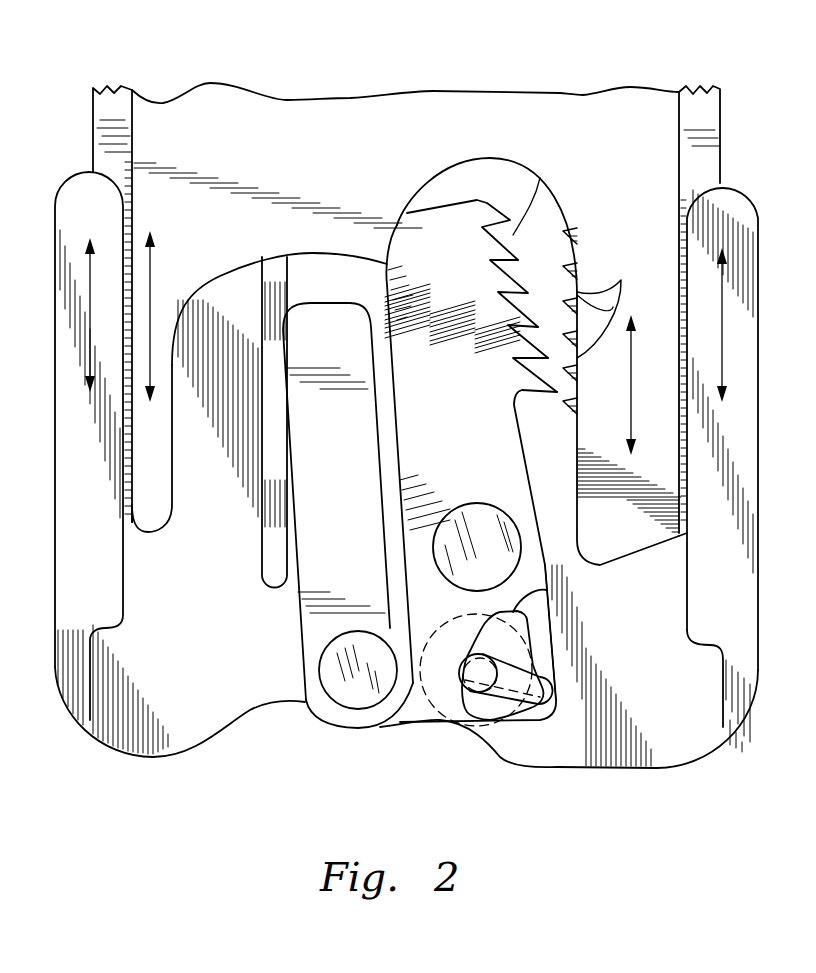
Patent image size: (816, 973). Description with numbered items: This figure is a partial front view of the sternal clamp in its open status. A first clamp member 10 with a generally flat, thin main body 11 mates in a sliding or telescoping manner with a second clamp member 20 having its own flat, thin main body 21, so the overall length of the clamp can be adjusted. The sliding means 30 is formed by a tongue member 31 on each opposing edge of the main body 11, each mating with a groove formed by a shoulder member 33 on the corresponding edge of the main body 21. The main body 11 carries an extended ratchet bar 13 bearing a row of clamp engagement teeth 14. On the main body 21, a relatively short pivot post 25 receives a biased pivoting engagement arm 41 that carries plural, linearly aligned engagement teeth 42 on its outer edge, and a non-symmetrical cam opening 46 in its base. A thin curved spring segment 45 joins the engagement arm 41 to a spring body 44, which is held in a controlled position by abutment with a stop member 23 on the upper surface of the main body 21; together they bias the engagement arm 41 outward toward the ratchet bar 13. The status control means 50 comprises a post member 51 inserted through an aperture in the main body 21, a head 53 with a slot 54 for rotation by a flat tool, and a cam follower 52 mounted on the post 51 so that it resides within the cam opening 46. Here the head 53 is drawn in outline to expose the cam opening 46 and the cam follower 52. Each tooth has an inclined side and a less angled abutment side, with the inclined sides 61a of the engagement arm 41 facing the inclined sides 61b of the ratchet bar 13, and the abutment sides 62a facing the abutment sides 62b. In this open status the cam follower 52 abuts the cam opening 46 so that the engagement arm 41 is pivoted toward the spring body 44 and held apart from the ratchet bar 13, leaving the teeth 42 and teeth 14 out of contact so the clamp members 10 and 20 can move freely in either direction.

The first clamp member 10 is at (709, 60).
The main body 11 is at (196, 243).
The ratchet bar member 13 is at (627, 540).
The engagement teeth 14 is at (597, 321).
The second clamp member 20 is at (756, 740).
The main body 21 is at (229, 635).
The stop member 23 is at (270, 512).
The pivot post 25 is at (470, 557).
The sliding means 30 is at (743, 168).
The tongue member 31 is at (93, 153).
The shoulder member 33 is at (55, 443).
The engagement arm 41 is at (444, 461).
The engagement teeth 42 is at (493, 212).
The spring body 44 is at (320, 488).
The spring segment 45 is at (318, 718).
The cam opening 46 is at (547, 590).
The status control means 50 is at (531, 752).
The post member 51 is at (490, 697).
The cam follower 52 is at (527, 663).
The head 53 is at (420, 700).
The slot 54 is at (443, 677).
The inclined side 61a is at (500, 270).
The inclined side 61b is at (575, 412).
The abutment side 62a is at (500, 283).
The abutment side 62b is at (580, 395).